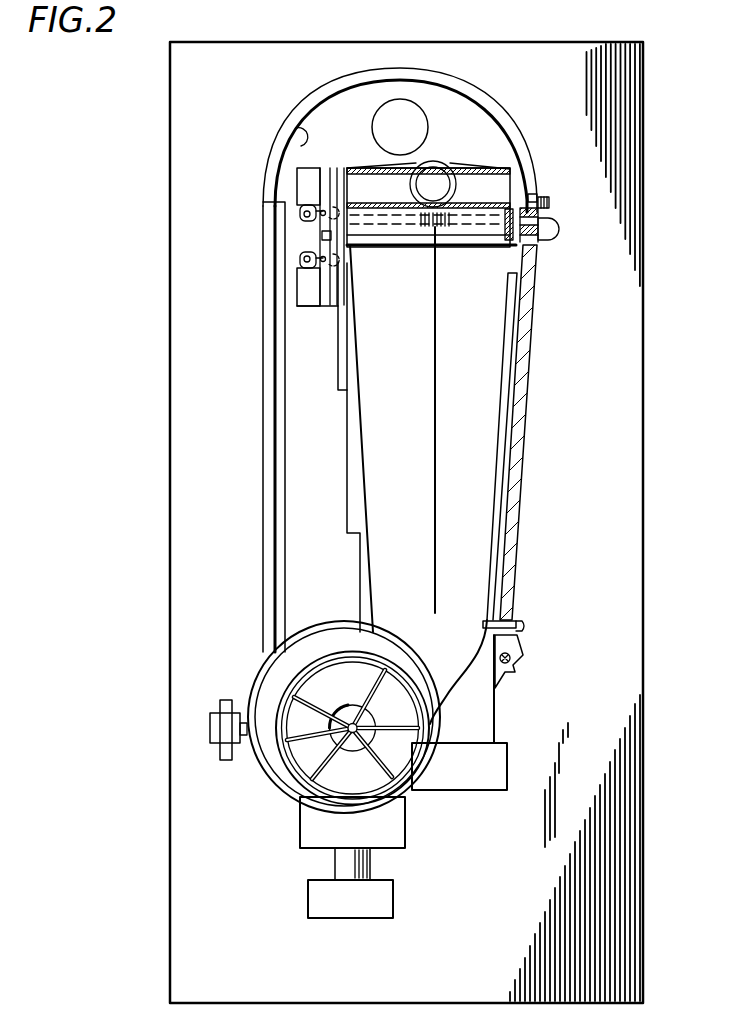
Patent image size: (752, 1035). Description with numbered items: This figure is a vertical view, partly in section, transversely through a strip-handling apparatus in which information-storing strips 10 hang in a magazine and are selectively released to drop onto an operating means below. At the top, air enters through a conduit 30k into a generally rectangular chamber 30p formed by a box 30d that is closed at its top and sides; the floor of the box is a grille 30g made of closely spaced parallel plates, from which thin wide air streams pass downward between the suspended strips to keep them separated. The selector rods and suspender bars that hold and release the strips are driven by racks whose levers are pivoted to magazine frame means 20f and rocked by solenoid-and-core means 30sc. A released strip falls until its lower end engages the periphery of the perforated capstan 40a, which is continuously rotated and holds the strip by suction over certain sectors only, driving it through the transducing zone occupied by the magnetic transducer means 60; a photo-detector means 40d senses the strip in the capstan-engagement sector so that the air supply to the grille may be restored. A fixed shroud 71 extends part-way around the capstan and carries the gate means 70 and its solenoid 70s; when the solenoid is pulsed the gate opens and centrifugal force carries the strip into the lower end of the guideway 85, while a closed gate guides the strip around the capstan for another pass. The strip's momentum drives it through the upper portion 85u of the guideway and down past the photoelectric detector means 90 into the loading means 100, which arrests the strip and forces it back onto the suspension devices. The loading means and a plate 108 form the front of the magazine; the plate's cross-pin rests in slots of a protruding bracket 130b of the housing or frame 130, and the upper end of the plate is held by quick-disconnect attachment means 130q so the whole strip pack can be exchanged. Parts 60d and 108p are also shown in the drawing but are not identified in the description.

The information-storing strips 10 is at (436, 357).
The magazine frame means 20f is at (345, 352).
The box 30d is at (488, 166).
The grille 30g is at (350, 217).
The conduit 30k is at (456, 187).
The chamber 30p is at (362, 190).
The solenoid-and-core means 30sc is at (306, 283).
The capstan 40a is at (428, 723).
The photo-detector means 40d is at (475, 757).
The magnetic transducer means 60 is at (406, 824).
The stem 60d is at (350, 862).
The gate means 70 is at (253, 680).
The solenoid 70s is at (212, 729).
The shroud 71 is at (270, 784).
The guideway 85 is at (272, 351).
The upper portion of the guideway 85u is at (292, 152).
The photoelectric detector means 90 is at (558, 231).
The loading means 100 is at (538, 357).
The plate 108 is at (535, 296).
The pin 108p is at (512, 660).
The housing or frame 130 is at (480, 738).
The bracket 130b is at (503, 678).
The quick-disconnect attachment means 130q is at (550, 197).